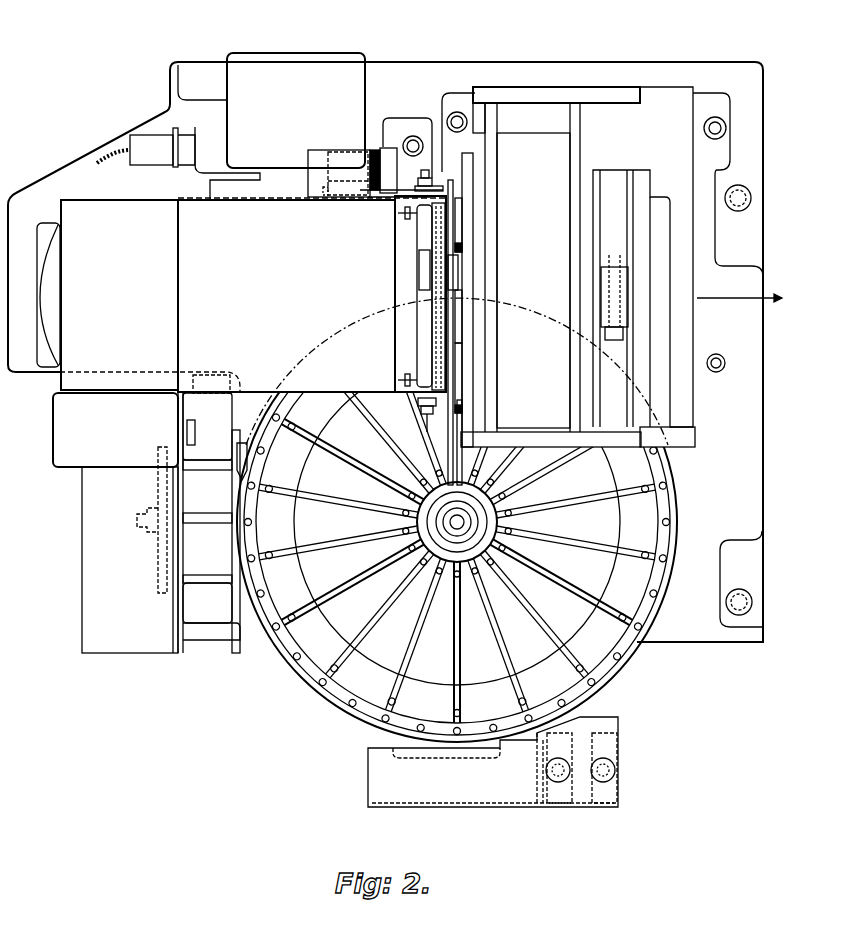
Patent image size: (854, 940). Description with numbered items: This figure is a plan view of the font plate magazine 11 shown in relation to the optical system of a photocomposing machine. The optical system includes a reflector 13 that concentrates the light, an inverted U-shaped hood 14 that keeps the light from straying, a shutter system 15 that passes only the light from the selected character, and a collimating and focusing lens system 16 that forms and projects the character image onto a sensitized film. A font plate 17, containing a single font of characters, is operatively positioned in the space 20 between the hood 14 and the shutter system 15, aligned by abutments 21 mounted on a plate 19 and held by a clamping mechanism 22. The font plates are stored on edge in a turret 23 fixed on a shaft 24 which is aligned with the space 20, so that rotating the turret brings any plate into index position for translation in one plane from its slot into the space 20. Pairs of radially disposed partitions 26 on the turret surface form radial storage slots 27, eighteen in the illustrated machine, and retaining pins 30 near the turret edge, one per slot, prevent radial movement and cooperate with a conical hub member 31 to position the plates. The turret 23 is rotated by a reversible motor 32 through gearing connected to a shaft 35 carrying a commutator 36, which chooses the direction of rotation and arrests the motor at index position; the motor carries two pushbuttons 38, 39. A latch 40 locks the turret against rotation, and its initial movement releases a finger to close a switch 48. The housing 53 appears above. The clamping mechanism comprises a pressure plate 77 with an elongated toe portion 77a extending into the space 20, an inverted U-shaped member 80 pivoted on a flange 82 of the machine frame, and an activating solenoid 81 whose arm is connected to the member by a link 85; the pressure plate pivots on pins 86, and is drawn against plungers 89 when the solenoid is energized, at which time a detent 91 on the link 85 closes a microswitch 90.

The font plate magazine 11 is at (290, 672).
The reflector 13 is at (38, 260).
The inverted U-shaped hood 14 is at (187, 260).
The shutter system 15 is at (552, 158).
The collimating and focusing lens system 16 is at (657, 180).
The font plate 17 is at (458, 328).
The plate 19 is at (467, 243).
The space 20 is at (452, 280).
The abutments 21 is at (460, 220).
The clamping mechanism 22 is at (424, 268).
The turret 23 is at (630, 657).
The shaft 24 is at (457, 527).
The partitions 26 is at (297, 440).
The radial storage slot 27 is at (330, 447).
The retaining pins 30 is at (675, 485).
The conical hub member 31 is at (435, 527).
The reversible motor 32 is at (400, 738).
The shaft 35 is at (197, 522).
The commutator 36 is at (158, 577).
The pushbutton 38 is at (558, 782).
The pushbutton 39 is at (620, 768).
The latch 40 is at (253, 420).
The switch 48 is at (207, 407).
The motor housing 53 is at (337, 65).
The pressure plate 77 is at (452, 263).
The elongated toe portion 77a is at (448, 433).
The inverted U-shaped member 80 is at (437, 290).
The activating solenoid 81 is at (308, 158).
The flange 82 is at (423, 233).
The link 85 is at (402, 195).
The pins 86 is at (427, 178).
The plungers 89 is at (405, 213).
The microswitch 90 is at (393, 152).
The detent 91 is at (377, 150).